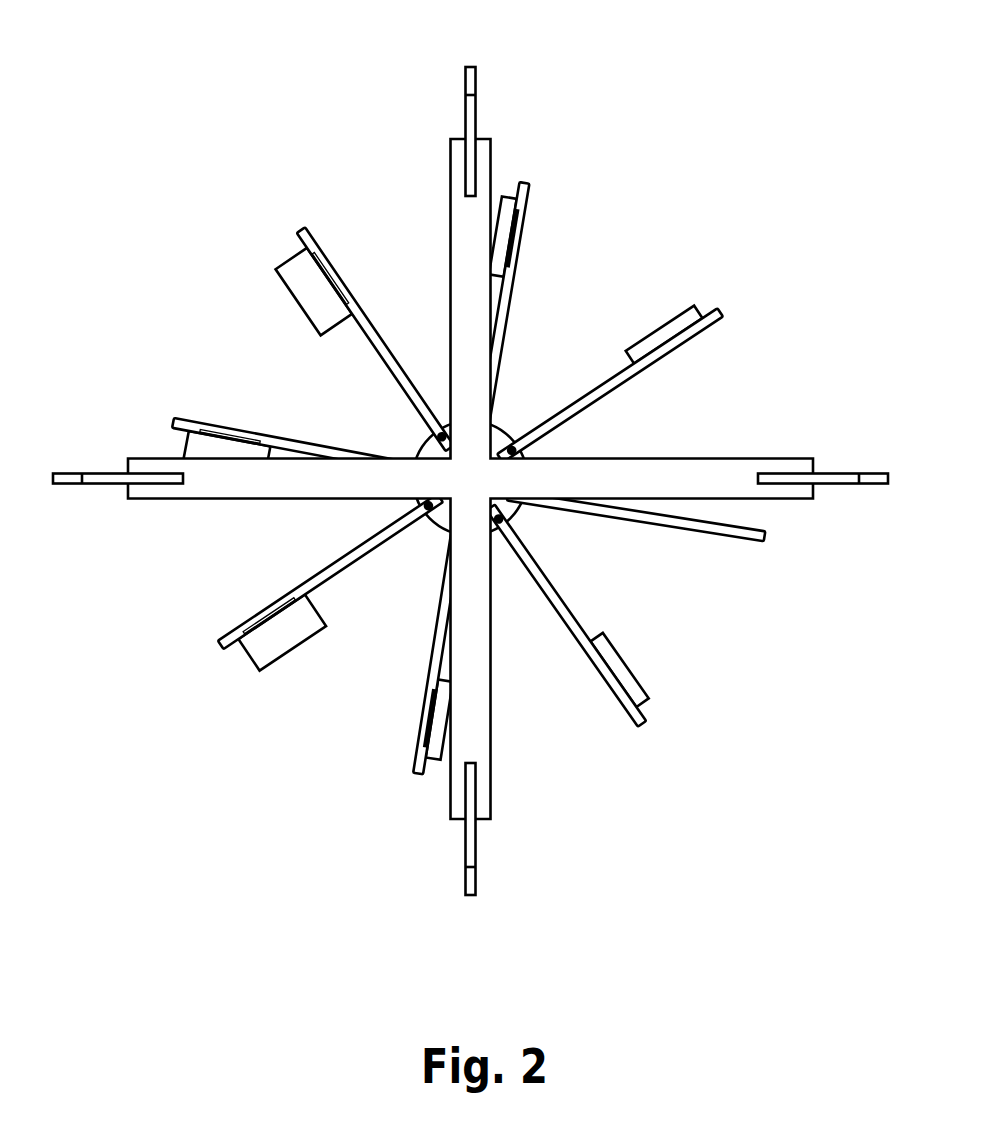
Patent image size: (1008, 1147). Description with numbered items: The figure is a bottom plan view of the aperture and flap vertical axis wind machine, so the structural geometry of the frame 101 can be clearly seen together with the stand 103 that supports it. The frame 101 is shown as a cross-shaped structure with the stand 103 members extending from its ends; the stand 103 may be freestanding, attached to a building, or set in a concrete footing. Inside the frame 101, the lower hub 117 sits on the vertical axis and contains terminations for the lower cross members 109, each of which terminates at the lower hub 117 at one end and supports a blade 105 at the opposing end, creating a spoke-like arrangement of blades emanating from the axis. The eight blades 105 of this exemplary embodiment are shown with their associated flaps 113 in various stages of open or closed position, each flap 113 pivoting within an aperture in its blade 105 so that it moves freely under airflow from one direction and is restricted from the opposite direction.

The frame 101 is at (213, 481).
The stand 103 is at (476, 79).
The blade 105 is at (764, 538).
The lower cross member 109 is at (595, 398).
The flap 113 is at (665, 333).
The lower hub 117 is at (437, 518).